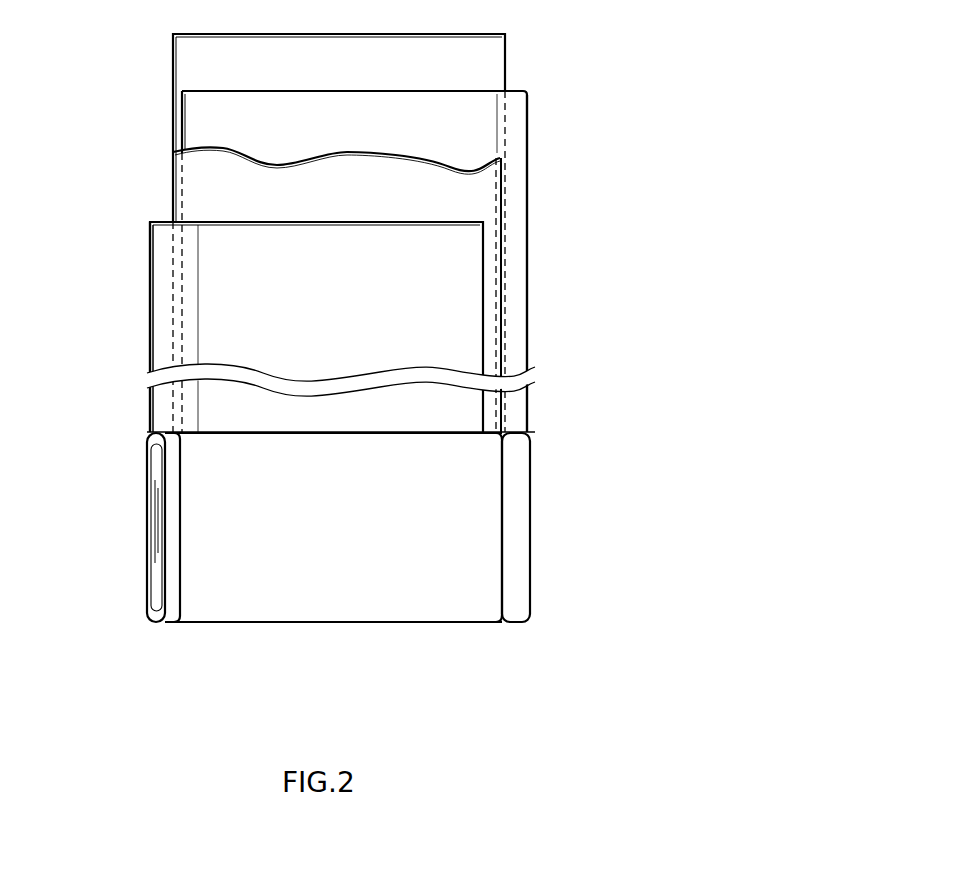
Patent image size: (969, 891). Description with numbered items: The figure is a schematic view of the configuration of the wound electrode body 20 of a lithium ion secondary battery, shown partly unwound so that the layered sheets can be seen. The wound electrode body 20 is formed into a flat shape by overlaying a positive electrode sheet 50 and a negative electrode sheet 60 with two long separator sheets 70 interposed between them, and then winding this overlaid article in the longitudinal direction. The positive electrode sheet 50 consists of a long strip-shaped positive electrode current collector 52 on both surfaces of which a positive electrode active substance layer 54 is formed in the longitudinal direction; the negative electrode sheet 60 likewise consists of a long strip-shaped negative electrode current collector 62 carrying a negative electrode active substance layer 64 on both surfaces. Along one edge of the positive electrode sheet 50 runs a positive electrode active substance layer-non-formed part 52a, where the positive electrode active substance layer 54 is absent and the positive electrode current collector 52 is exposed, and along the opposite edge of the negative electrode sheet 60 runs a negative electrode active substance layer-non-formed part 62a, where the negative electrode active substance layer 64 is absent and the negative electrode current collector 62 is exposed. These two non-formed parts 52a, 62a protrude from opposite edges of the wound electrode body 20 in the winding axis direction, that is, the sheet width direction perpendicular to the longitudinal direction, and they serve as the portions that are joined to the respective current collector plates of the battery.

The wound electrode body 20 is at (400, 600).
The positive electrode sheet 50 is at (150, 292).
The positive electrode current collector 52 is at (148, 358).
The positive electrode active substance layer-non-formed part 52a is at (165, 327).
The positive electrode active substance layer 54 is at (210, 242).
The negative electrode sheet 60 is at (527, 167).
The negative electrode current collector 62 is at (530, 268).
The negative electrode active substance layer-non-formed part 62a is at (515, 236).
The negative electrode active substance layer 64 is at (490, 118).
The separator sheet 70 is at (195, 54).